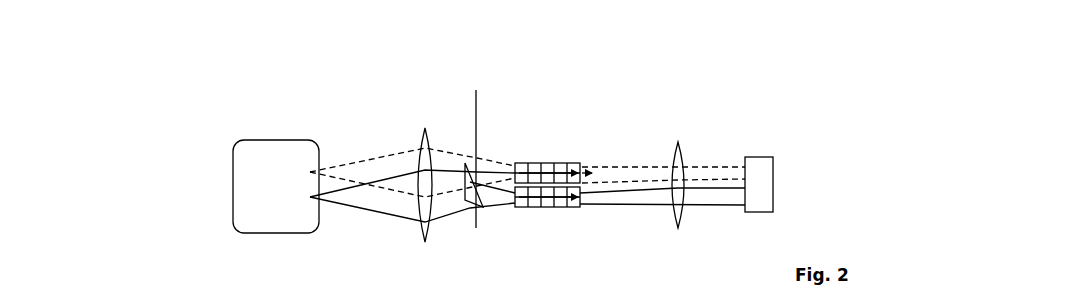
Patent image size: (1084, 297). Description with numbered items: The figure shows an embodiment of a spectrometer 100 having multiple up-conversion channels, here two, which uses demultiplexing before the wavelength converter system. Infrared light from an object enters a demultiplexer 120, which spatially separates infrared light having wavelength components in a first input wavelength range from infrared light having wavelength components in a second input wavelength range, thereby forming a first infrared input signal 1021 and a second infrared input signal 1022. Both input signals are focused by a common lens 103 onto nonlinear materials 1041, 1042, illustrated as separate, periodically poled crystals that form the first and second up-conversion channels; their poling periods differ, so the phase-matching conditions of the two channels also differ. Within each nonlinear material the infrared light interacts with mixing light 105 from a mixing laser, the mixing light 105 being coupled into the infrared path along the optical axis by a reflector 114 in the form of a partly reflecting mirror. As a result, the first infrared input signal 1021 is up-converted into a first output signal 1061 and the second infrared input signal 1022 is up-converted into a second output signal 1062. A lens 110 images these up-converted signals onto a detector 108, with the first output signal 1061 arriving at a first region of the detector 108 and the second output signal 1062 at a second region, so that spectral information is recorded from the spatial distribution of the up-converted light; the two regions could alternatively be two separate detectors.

The spectrometer 100 is at (791, 53).
The demultiplexer 120 is at (276, 206).
The second infrared input signal 1022 is at (412, 146).
The first infrared input signal 1021 is at (412, 221).
The lens 103 is at (441, 204).
The mixing light 105 is at (500, 159).
The reflector 114 is at (485, 209).
The second nonlinear material 1042 is at (553, 145).
The first nonlinear material 1041 is at (547, 222).
The second output signal 1062 is at (663, 148).
The first output signal 1061 is at (662, 222).
The lens 110 is at (697, 162).
The detector 108 is at (773, 164).